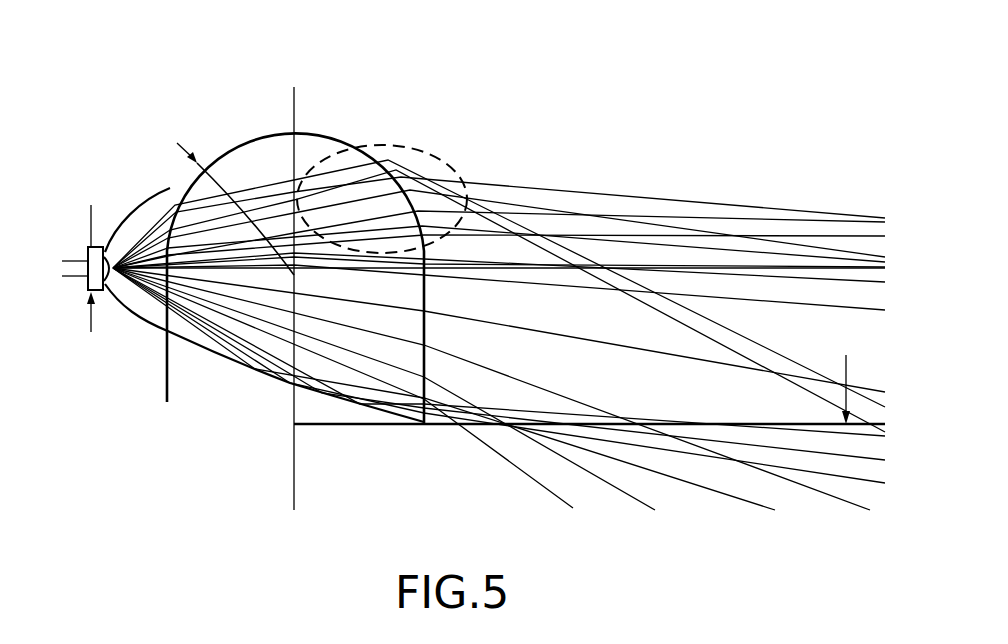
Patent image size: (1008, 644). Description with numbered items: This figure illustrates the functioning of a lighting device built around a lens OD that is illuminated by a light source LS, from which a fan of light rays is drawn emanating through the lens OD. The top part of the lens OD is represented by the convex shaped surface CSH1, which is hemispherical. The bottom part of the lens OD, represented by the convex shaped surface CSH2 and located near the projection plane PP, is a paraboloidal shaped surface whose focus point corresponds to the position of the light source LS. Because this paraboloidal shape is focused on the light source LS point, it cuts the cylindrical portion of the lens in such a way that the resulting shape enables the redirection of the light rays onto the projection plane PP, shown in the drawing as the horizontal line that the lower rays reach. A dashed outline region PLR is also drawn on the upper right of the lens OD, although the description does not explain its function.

The light source LS is at (90, 248).
The convex shaped surface CSH1 is at (225, 137).
The convex shaped surface CSH2 is at (219, 366).
The lens OD is at (336, 150).
The pupil-like region PLR is at (408, 162).
The projection plane PP is at (330, 434).